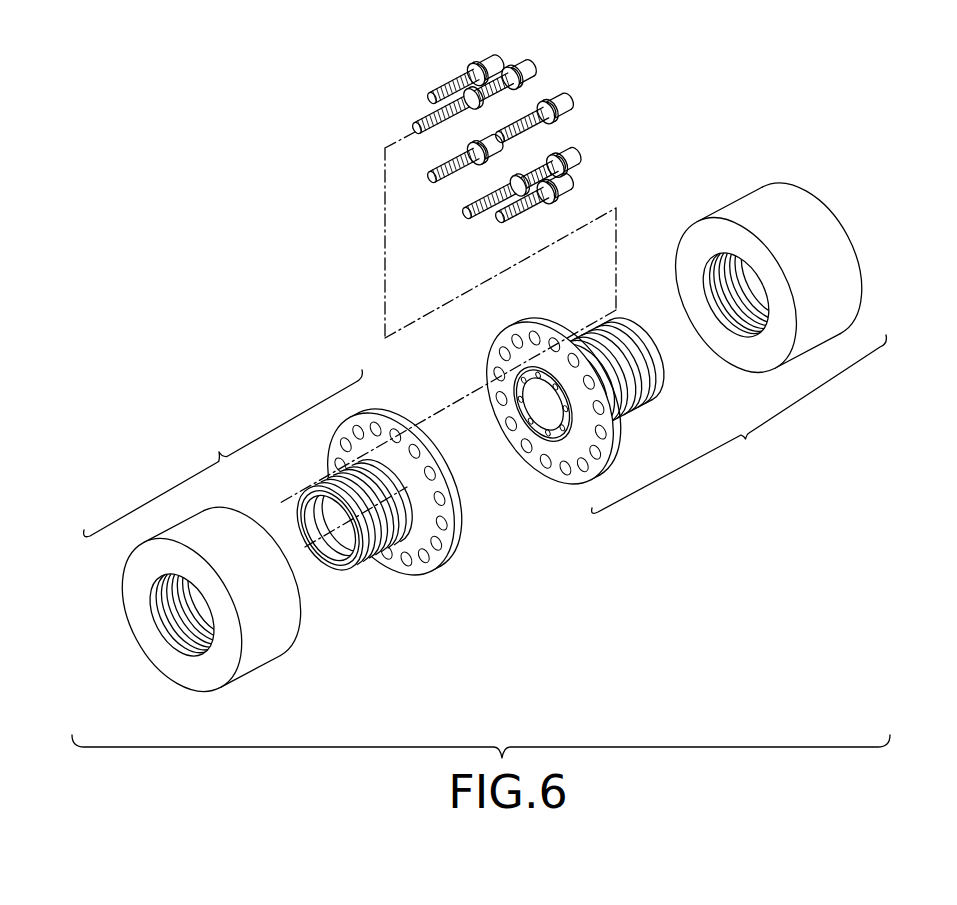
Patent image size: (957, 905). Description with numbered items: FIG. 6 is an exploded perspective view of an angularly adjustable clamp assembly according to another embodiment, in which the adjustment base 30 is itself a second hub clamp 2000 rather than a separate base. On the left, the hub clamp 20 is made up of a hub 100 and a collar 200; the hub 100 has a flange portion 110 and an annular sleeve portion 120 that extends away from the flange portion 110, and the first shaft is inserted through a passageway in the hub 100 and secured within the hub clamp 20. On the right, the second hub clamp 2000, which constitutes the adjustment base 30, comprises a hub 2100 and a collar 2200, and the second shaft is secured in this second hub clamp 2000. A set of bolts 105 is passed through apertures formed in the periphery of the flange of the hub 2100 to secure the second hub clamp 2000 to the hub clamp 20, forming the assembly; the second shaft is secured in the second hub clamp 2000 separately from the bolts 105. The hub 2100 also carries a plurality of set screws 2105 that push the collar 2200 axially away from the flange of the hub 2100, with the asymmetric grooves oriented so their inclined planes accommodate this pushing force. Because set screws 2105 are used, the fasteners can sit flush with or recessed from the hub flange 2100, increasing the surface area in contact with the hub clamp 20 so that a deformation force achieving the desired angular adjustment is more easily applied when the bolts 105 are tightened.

The hub clamp 20 is at (223, 453).
The adjustment base 30 is at (739, 424).
The hub 100 is at (433, 586).
The bolts 105 is at (452, 78).
The flange portion 110 is at (456, 526).
The annular sleeve portion 120 is at (366, 554).
The collar 200 is at (264, 646).
The hub clamp 2000 is at (660, 206).
The hub 2100 is at (610, 440).
The set screws 2105 is at (566, 436).
The collar 2200 is at (832, 249).